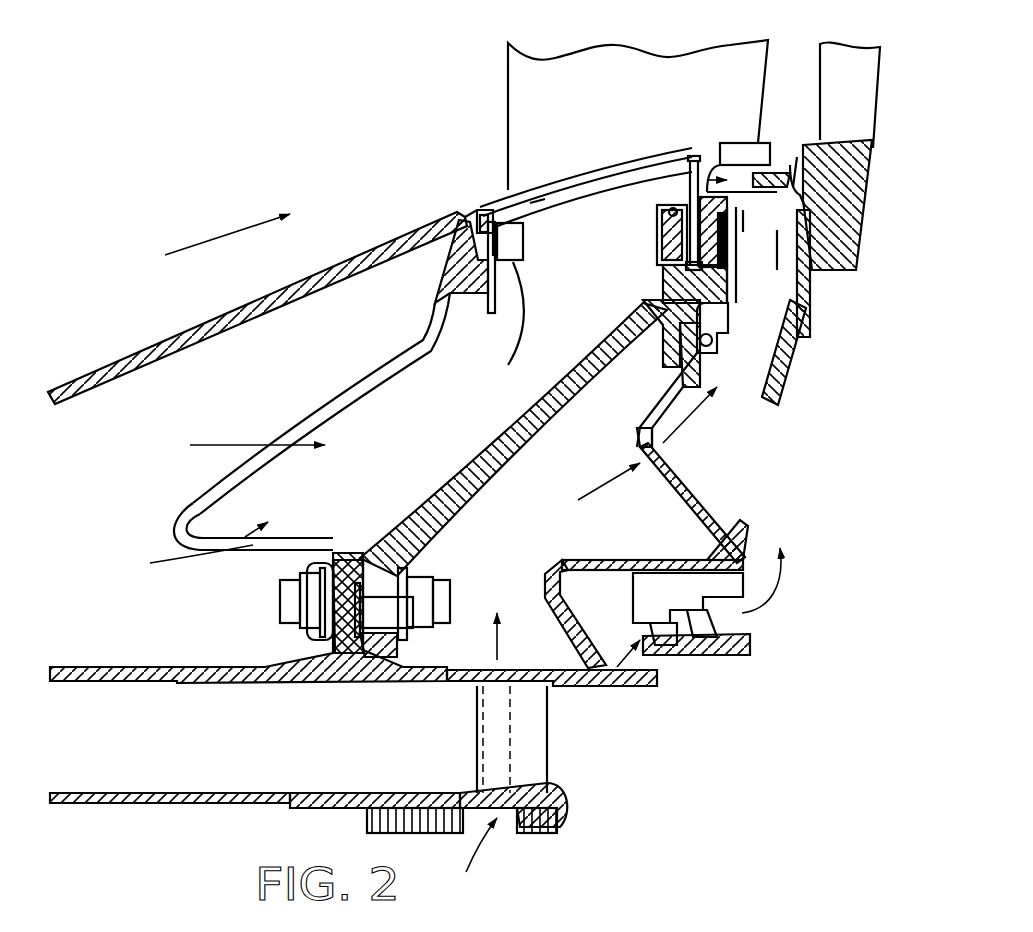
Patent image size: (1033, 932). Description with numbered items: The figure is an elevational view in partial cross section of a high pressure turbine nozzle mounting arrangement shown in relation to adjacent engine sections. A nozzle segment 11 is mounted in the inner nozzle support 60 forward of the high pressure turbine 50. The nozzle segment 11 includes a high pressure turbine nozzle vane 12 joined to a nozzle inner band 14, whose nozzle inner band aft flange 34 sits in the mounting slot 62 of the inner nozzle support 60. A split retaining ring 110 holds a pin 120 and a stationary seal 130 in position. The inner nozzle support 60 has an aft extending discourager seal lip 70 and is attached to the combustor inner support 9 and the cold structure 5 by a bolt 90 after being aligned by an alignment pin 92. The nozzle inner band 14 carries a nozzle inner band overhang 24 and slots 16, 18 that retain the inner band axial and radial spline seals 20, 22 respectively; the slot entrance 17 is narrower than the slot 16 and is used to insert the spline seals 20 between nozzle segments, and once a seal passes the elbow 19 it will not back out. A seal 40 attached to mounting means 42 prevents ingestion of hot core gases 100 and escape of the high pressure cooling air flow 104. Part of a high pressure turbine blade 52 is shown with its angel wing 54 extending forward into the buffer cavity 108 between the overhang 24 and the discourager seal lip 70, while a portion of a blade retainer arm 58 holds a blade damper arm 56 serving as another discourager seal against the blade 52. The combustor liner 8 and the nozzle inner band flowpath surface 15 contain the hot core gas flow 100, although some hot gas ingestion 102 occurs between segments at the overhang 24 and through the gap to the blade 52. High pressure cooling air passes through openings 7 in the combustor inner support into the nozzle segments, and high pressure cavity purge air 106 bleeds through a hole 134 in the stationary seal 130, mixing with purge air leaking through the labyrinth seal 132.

The cold structure 5 is at (130, 667).
The openings in the combustor inner support 7 is at (217, 484).
The combustor liner 8 is at (163, 340).
The combustor inner support 9 is at (322, 538).
The nozzle segment 11 is at (495, 108).
The high pressure turbine nozzle vane 12 is at (626, 97).
The nozzle inner band 14 is at (573, 172).
The nozzle inner band flowpath surface 15 is at (604, 162).
The slot 16 is at (540, 193).
The slot entrance 17 is at (477, 215).
The slot 18 is at (668, 182).
The elbow 19 is at (490, 205).
The inner band axial spline seal 20 is at (530, 256).
The inner band radial spline seal 22 is at (700, 165).
The nozzle inner band overhang 24 is at (777, 140).
The nozzle inner band aft flange 34 is at (660, 285).
The seal 40 is at (496, 312).
The mounting means 42 is at (500, 325).
The high pressure turbine 50 is at (832, 382).
The high pressure turbine blade 52 is at (858, 122).
The high pressure turbine blade angel wing 54 is at (797, 157).
The high pressure turbine blade damper arm 56 is at (792, 258).
The high pressure turbine blade retainer arm 58 is at (765, 405).
The inner nozzle support 60 is at (520, 453).
The mounting slot 62 is at (660, 263).
The discourager seal lip 70 is at (747, 212).
The bolt 90 is at (460, 599).
The alignment pin 92 is at (395, 620).
The hot core gas flow 100 is at (238, 235).
The hot gas ingestion 102 is at (746, 150).
The high pressure cooling air flow 104 is at (253, 440).
The high pressure cavity purge air 106 is at (578, 500).
The buffer cavity 108 is at (668, 200).
The split retaining ring 110 is at (730, 347).
The pin 120 is at (657, 233).
The stationary seal 130 is at (560, 563).
The labyrinth seal 132 is at (715, 668).
The hole 134 is at (634, 462).